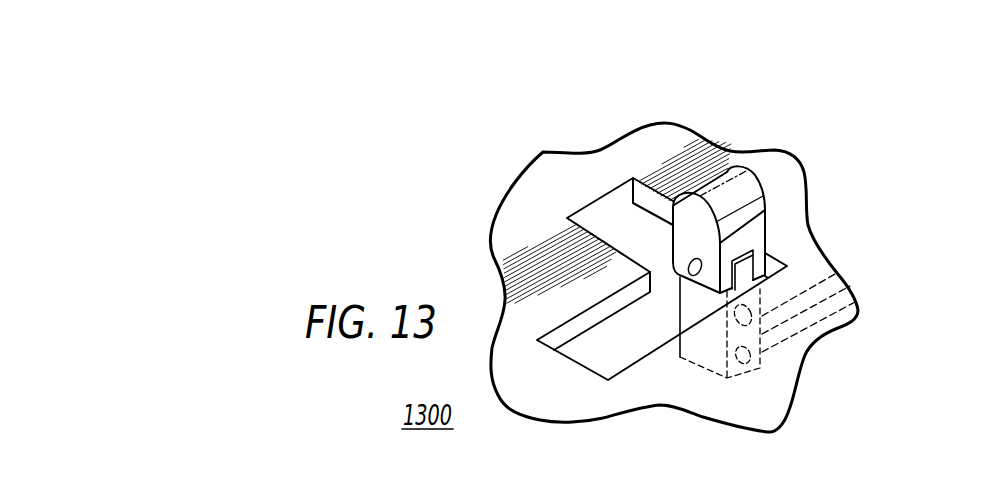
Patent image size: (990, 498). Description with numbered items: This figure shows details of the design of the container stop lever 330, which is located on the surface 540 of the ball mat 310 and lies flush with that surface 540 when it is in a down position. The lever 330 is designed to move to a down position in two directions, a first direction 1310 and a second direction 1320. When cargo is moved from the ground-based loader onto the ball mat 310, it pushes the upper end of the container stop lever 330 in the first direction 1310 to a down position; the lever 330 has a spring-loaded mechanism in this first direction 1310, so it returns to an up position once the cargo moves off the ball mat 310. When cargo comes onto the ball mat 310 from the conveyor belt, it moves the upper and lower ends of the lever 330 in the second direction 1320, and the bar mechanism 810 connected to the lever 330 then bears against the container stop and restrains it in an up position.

The ball mat 310 is at (548, 247).
The surface of the ball mat 540 is at (658, 162).
The first direction 1310 is at (623, 225).
The second direction 1320 is at (598, 352).
The container stop lever 330 is at (737, 187).
The bar mechanism 810 is at (818, 312).